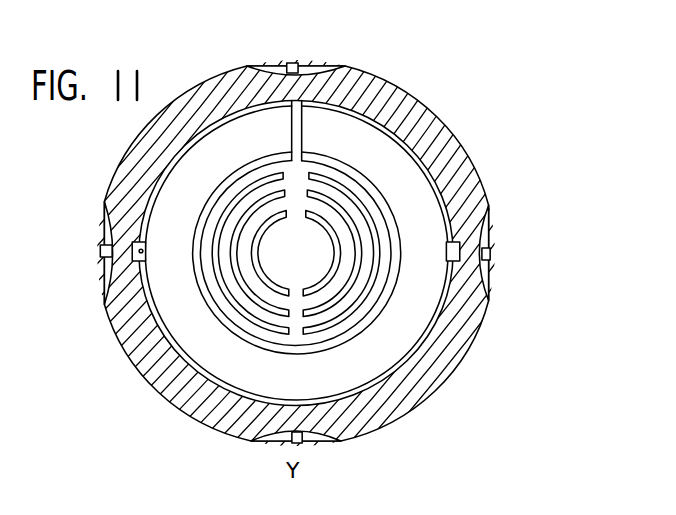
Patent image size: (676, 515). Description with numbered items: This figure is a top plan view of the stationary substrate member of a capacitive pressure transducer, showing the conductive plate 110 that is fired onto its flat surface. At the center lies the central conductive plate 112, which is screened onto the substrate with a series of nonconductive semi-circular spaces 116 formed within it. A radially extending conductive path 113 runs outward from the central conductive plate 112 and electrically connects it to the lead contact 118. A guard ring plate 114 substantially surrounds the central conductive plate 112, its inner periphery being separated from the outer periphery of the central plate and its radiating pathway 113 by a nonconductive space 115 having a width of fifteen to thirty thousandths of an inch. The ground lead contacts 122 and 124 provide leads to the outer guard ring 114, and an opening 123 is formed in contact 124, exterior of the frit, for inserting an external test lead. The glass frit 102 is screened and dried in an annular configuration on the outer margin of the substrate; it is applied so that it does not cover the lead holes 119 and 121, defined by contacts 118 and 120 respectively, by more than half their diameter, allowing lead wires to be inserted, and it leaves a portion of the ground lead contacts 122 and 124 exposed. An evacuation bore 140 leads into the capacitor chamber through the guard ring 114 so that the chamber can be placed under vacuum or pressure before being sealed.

The glass frit 102 is at (405, 390).
The conductive plate 110 is at (430, 323).
The central conductive plate 112 is at (360, 233).
The radially extending conductive path 113 is at (300, 131).
The guard ring plate 114 is at (422, 194).
The nonconductive space 115 is at (481, 205).
The nonconductive semi-circular spaces 116 is at (233, 257).
The lead contact 118 is at (308, 66).
The lead hole 119 is at (292, 62).
The lead contact 120 is at (302, 443).
The lead hole 121 is at (290, 443).
The ground lead contact 122 is at (100, 253).
The opening 123 is at (493, 248).
The ground lead contact 124 is at (491, 262).
The evacuation bore 140 is at (138, 232).